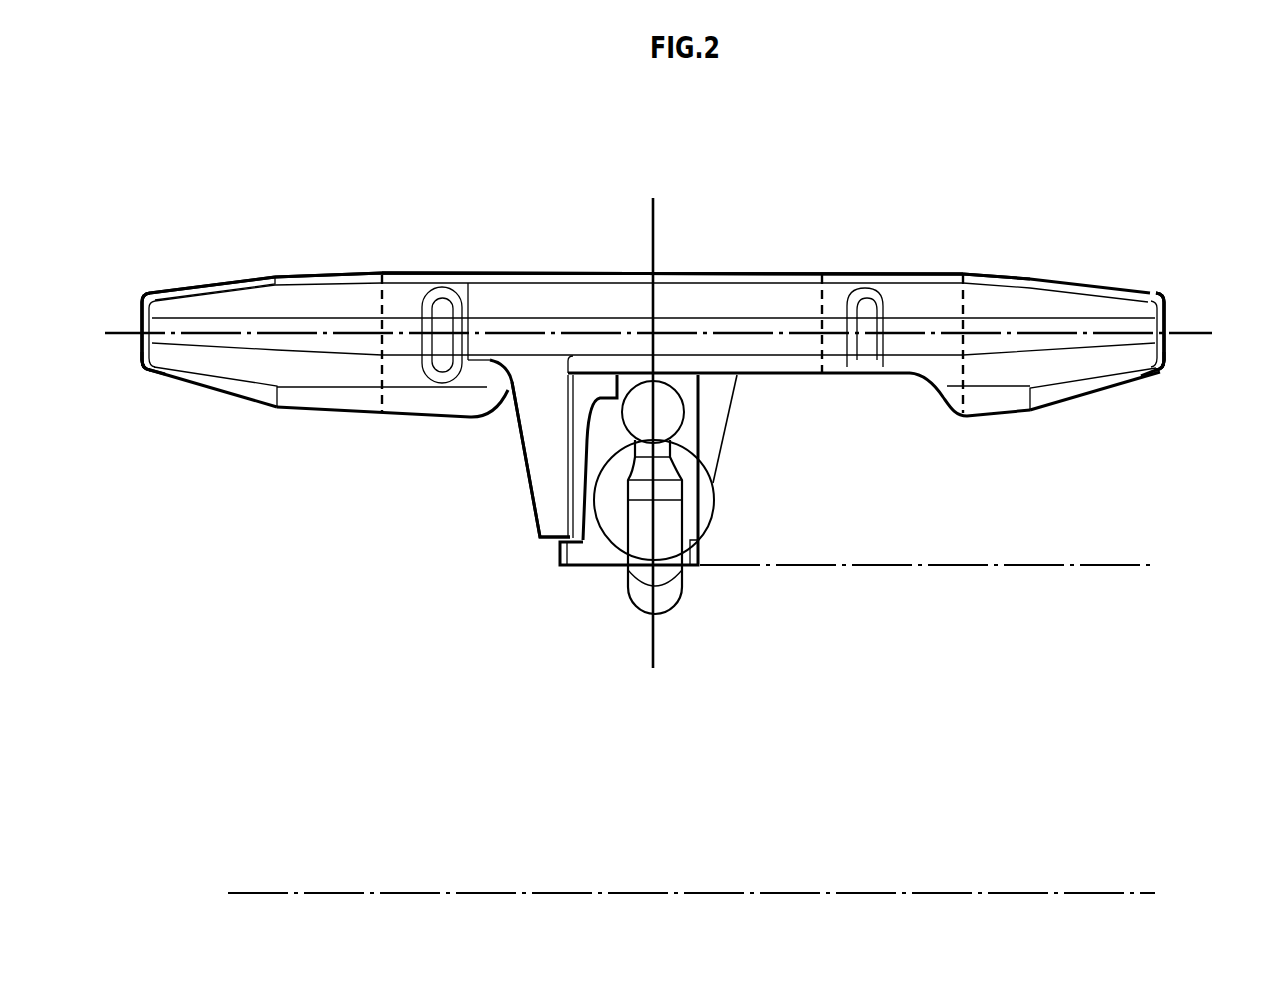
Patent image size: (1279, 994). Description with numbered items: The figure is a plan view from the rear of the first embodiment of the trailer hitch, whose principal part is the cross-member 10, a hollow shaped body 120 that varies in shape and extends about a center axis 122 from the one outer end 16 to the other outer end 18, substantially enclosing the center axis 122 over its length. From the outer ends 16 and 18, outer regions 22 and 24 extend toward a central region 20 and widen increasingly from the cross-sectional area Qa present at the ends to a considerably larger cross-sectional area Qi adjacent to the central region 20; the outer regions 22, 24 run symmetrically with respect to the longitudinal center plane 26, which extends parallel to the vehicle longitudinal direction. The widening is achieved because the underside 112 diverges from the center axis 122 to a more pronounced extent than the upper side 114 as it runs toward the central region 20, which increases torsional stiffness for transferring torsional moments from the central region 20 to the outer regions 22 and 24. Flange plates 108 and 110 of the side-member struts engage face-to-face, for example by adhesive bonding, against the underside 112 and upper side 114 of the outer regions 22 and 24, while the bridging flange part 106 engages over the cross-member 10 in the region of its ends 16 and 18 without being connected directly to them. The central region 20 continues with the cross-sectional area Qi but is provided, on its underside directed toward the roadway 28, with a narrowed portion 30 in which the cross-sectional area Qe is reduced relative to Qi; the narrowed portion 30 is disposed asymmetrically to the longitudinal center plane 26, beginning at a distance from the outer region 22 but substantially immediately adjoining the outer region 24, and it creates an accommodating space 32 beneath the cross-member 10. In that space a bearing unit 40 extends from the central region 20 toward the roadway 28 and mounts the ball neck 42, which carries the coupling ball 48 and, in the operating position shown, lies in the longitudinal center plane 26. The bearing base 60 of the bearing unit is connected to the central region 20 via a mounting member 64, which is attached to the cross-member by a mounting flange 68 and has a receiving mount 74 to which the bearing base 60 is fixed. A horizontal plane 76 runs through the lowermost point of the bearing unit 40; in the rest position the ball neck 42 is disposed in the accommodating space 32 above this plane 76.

The cross-member 10 is at (910, 266).
The outer end 16 is at (143, 368).
The outer end 18 is at (1160, 375).
The central region 20 is at (743, 313).
The outer region 22 is at (217, 322).
The outer region 24 is at (1077, 323).
The longitudinal center plane 26 is at (657, 218).
The roadway 28 is at (878, 891).
The narrowed portion 30 is at (832, 380).
The accommodating space 32 is at (768, 390).
The bearing unit 40 is at (583, 553).
The ball neck 42 is at (663, 532).
The coupling ball 48 is at (673, 417).
The bearing base 60 is at (603, 548).
The mounting member 64 is at (503, 345).
The mounting flange 68 is at (586, 303).
The receiving mount 74 is at (550, 492).
The horizontal plane 76 is at (1110, 567).
The bridging flange part 106 is at (140, 342).
The flange plate 108 is at (245, 388).
The flange plate 110 is at (251, 276).
The underside 112 is at (322, 413).
The upper side 114 is at (336, 272).
The hollow shaped body 120 is at (499, 268).
The center axis 122 is at (402, 326).
The cross-sectional area Qa is at (1193, 212).
The cross-sectional area Qe is at (825, 290).
The cross-sectional area Qi is at (387, 380).